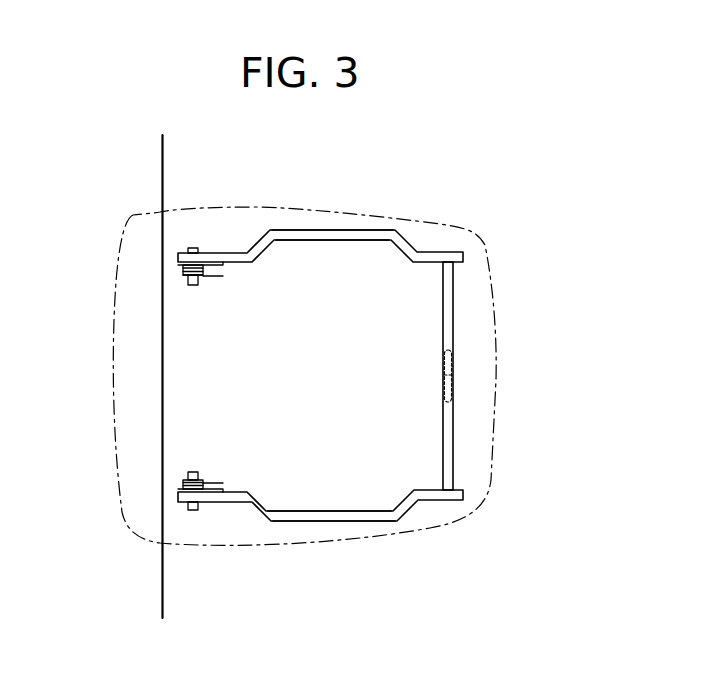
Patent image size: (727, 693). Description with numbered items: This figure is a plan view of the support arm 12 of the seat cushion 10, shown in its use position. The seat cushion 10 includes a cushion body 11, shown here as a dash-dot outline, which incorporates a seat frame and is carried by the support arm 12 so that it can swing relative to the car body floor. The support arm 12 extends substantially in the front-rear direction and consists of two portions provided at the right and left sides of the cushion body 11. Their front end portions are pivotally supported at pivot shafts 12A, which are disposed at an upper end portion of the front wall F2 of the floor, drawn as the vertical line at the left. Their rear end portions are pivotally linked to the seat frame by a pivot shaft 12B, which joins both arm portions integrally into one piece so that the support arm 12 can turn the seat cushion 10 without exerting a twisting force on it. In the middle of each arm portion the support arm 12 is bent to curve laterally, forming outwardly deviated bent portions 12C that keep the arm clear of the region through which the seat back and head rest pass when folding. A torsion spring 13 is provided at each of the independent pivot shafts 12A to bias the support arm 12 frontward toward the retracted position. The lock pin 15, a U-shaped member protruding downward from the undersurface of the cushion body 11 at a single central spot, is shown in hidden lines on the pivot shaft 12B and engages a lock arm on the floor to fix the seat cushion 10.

The front wall F2 is at (163, 175).
The seat cushion 10 is at (381, 172).
The cushion body 11 is at (281, 207).
The support arm 12 is at (431, 252).
The pivot shaft 12A is at (193, 248).
The pivot shaft 12B is at (452, 421).
The bent portion 12C is at (322, 230).
The torsion spring 13 is at (212, 276).
The lock pin 15 is at (452, 376).